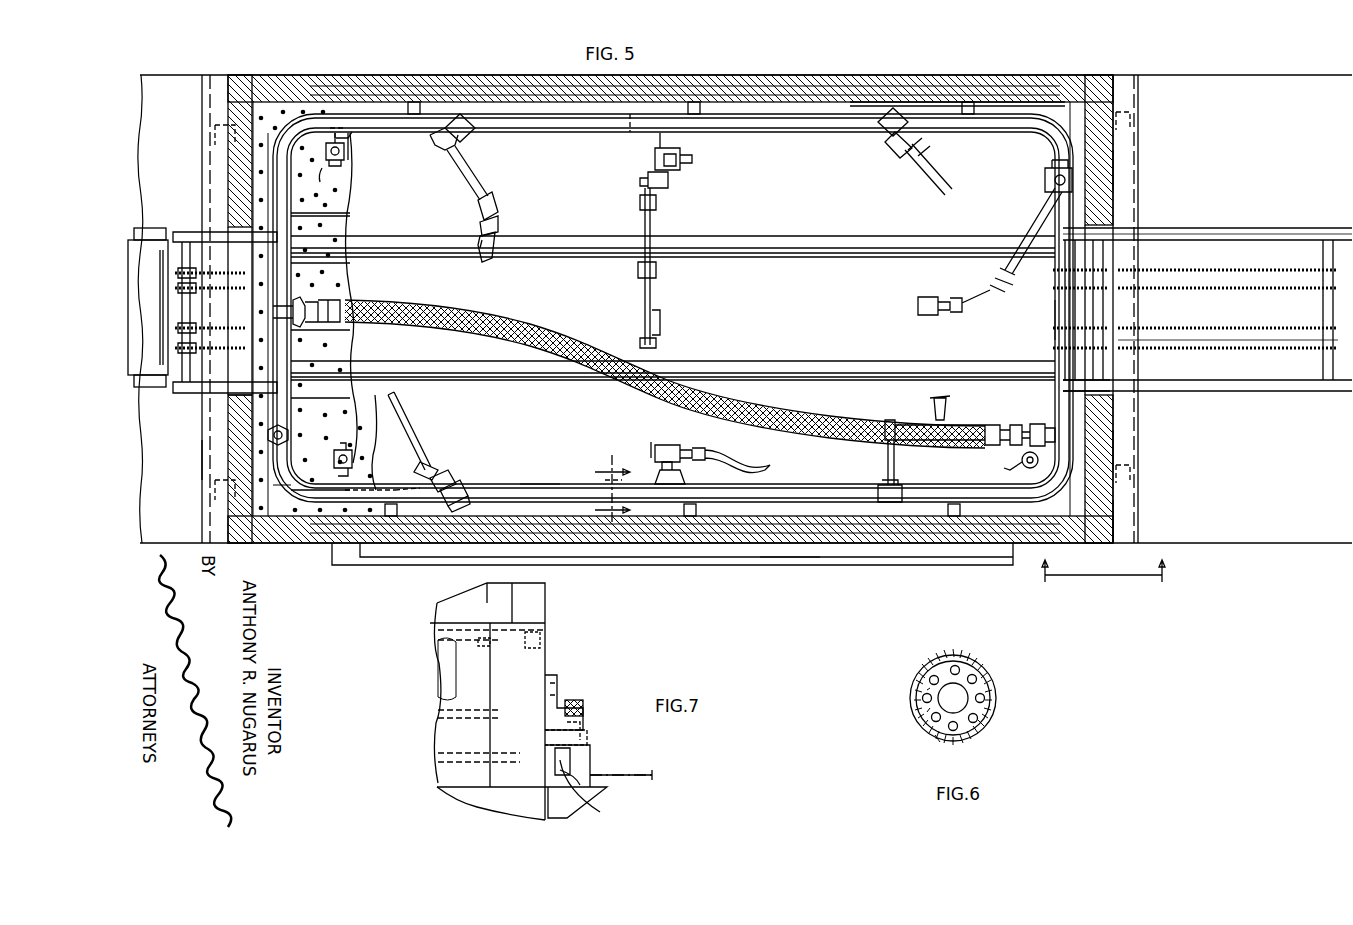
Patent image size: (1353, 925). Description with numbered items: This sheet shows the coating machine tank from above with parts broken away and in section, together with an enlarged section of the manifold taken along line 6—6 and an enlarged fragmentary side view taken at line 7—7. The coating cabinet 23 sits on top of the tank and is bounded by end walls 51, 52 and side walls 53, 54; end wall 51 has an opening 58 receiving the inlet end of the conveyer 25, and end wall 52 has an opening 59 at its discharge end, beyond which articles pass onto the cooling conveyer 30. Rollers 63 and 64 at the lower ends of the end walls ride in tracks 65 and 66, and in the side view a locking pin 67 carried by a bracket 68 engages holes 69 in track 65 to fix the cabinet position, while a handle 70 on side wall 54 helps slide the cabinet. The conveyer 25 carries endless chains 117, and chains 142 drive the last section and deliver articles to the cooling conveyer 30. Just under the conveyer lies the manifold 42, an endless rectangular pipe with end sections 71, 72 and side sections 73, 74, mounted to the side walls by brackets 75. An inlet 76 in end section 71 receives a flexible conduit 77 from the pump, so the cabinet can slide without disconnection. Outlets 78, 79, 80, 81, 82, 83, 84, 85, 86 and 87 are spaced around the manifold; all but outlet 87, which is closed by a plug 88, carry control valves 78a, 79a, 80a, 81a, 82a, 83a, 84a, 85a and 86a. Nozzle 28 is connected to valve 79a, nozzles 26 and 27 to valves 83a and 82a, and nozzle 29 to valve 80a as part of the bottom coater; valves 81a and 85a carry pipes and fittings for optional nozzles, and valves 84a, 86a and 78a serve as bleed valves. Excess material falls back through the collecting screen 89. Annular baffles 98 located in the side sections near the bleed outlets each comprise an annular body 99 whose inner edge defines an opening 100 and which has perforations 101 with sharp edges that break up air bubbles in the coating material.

In FIG. 5, the section line 6— 6 is at (605, 490).
In FIG. 5, the section line 7— 7 is at (1104, 581).
In FIG. 5, the coating cabinet 23 is at (1116, 445).
In FIG. 7, the coating cabinet 23 is at (548, 658).
In FIG. 5, the conveyer 25 is at (1212, 226).
In FIG. 5, the coating nozzle 26 is at (948, 406).
In FIG. 5, the coating nozzle 27 is at (918, 306).
In FIG. 5, the coating nozzle 28 is at (482, 258).
In FIG. 5, the coating nozzle 29 is at (660, 305).
In FIG. 5, the cooling conveyer 30 is at (152, 378).
In FIG. 5, the manifold 42 is at (762, 110).
In FIG. 5, the end wall 51 is at (1113, 172).
In FIG. 7, the end wall 51 is at (545, 640).
In FIG. 5, the end wall 52 is at (228, 172).
In FIG. 5, the side wall 53 is at (860, 100).
In FIG. 5, the side wall 54 is at (790, 560).
In FIG. 5, the opening 58 is at (1110, 388).
In FIG. 5, the opening 59 is at (235, 395).
In FIG. 5, the roller 63 is at (1133, 118).
In FIG. 7, the roller 63 is at (580, 813).
In FIG. 5, the roller 64 is at (232, 80).
In FIG. 5, the track 65 is at (1138, 521).
In FIG. 7, the track 65 is at (592, 762).
In FIG. 5, the track 66 is at (205, 462).
In FIG. 7, the locking pin 67 is at (585, 704).
In FIG. 7, the bracket 68 is at (560, 690).
In FIG. 7, the hole 69 is at (588, 738).
In FIG. 5, the handle 70 is at (643, 565).
In FIG. 5, the end section 71 is at (1052, 320).
In FIG. 5, the end section 72 is at (352, 215).
In FIG. 5, the side section 73 is at (583, 128).
In FIG. 5, the side section 74 is at (530, 490).
In FIG. 6, the side section 74 is at (990, 678).
In FIG. 5, the bracket 75 is at (414, 105).
In FIG. 5, the inlet 76 is at (1040, 422).
In FIG. 5, the flexible conduit 77 is at (848, 414).
In FIG. 5, the outlet 78 is at (350, 144).
In FIG. 5, the control valve 78a is at (318, 183).
In FIG. 5, the outlet 79 is at (468, 118).
In FIG. 5, the control valve 79a is at (479, 191).
In FIG. 5, the outlet 80 is at (692, 148).
In FIG. 5, the control valve 80a is at (700, 175).
In FIG. 5, the outlet 81 is at (925, 120).
In FIG. 5, the control valve 81a is at (905, 166).
In FIG. 5, the outlet 82 is at (1048, 190).
In FIG. 5, the control valve 82a is at (1050, 176).
In FIG. 5, the outlet 83 is at (878, 492).
In FIG. 5, the control valve 83a is at (1000, 470).
In FIG. 5, the outlet 84 is at (684, 478).
In FIG. 5, the control valve 84a is at (666, 444).
In FIG. 5, the outlet 85 is at (478, 490).
In FIG. 5, the control valve 85a is at (462, 470).
In FIG. 5, the outlet 86 is at (418, 448).
In FIG. 5, the control valve 86a is at (352, 462).
In FIG. 5, the outlet 87 is at (290, 436).
In FIG. 5, the plug 88 is at (272, 496).
In FIG. 5, the collecting screen 89 is at (347, 292).
In FIG. 5, the annular baffle 98 is at (340, 128).
In FIG. 6, the annular baffle 98 is at (995, 686).
In FIG. 6, the annular body 99 is at (996, 708).
In FIG. 6, the opening 100 is at (940, 700).
In FIG. 6, the perforation 101 is at (940, 738).
In FIG. 5, the endless chain 117 is at (1250, 270).
In FIG. 5, the chain 142 is at (1270, 345).